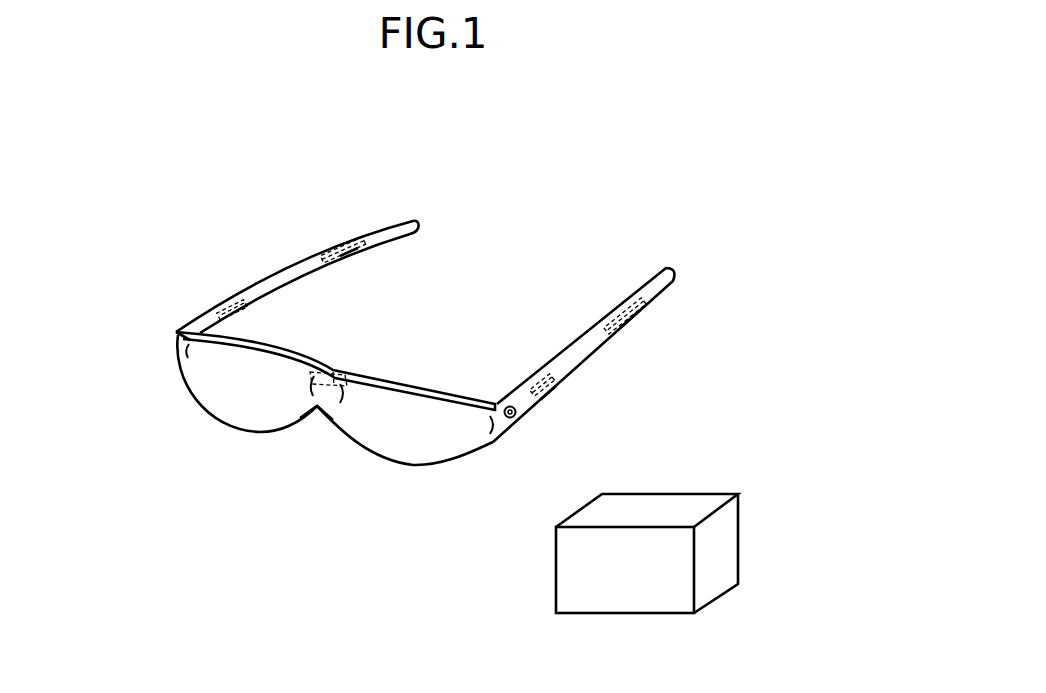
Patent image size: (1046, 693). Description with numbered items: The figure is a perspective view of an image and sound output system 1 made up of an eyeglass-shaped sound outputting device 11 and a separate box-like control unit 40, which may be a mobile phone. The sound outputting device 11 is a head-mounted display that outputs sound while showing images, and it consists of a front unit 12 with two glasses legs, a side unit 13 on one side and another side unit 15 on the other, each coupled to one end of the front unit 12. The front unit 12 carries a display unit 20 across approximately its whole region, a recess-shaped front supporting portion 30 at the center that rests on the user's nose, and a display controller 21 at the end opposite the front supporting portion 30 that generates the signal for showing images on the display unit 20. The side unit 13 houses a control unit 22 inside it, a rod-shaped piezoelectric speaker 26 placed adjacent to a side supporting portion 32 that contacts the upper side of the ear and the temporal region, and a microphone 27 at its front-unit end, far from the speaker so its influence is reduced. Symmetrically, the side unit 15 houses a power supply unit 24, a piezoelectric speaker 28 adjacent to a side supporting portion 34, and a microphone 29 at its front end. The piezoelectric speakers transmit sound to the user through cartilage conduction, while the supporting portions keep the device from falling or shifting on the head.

The image and sound output system 1 is at (259, 140).
The sound outputting device 11 is at (533, 377).
The front unit 12 is at (390, 445).
The side unit 13 is at (581, 360).
The side unit 15 is at (293, 277).
The display unit 20 is at (228, 407).
The display controller 21 is at (333, 370).
The control unit 22 is at (549, 397).
The power supply unit 24 is at (222, 300).
The piezoelectric speaker 26 is at (617, 305).
The microphone 27 is at (502, 417).
The piezoelectric speaker 28 is at (333, 243).
The microphone 29 is at (177, 333).
The front supporting portion 30 is at (320, 408).
The side supporting portion 32 is at (630, 320).
The side supporting portion 34 is at (357, 246).
The control unit 40 is at (711, 494).